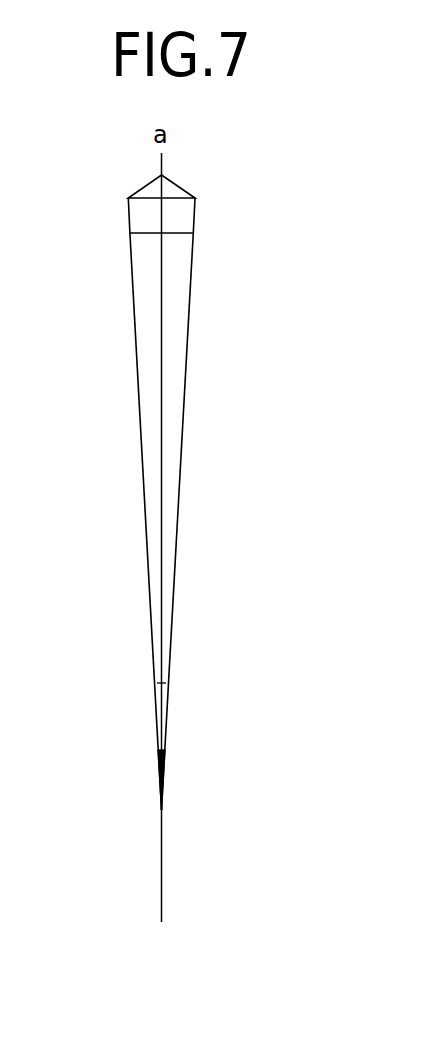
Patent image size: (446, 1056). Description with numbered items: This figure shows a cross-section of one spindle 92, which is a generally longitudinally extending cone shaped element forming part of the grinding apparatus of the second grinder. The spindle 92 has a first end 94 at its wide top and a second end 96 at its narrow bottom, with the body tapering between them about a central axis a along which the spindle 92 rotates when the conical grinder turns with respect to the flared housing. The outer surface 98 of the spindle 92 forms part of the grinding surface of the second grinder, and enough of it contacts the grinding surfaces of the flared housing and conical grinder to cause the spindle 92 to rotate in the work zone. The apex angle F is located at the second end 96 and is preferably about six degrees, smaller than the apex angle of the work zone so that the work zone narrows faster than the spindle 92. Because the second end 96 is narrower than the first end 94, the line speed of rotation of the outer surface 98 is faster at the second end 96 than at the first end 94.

The spindle 92 is at (262, 478).
The first end 94 is at (206, 174).
The outer surface 98 is at (198, 400).
The second end 96 is at (163, 810).
The apex angle F is at (157, 683).